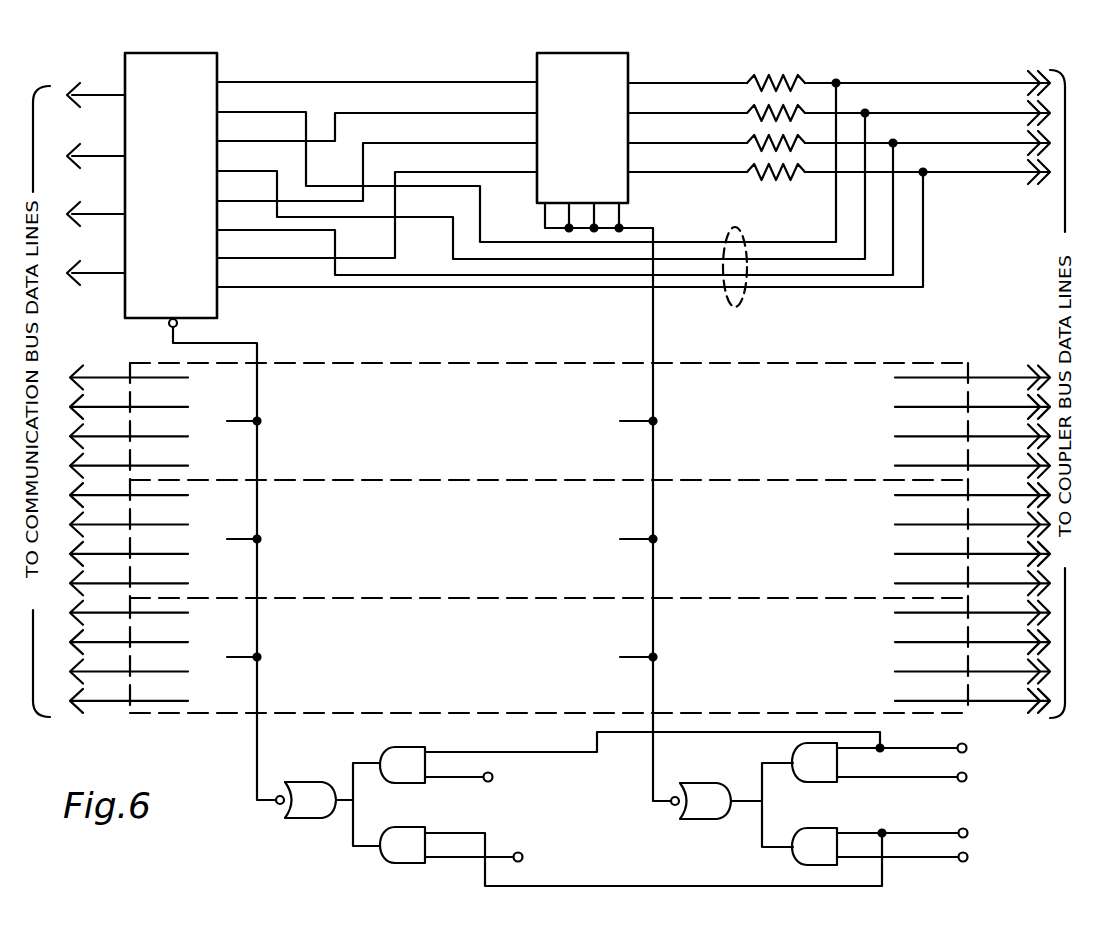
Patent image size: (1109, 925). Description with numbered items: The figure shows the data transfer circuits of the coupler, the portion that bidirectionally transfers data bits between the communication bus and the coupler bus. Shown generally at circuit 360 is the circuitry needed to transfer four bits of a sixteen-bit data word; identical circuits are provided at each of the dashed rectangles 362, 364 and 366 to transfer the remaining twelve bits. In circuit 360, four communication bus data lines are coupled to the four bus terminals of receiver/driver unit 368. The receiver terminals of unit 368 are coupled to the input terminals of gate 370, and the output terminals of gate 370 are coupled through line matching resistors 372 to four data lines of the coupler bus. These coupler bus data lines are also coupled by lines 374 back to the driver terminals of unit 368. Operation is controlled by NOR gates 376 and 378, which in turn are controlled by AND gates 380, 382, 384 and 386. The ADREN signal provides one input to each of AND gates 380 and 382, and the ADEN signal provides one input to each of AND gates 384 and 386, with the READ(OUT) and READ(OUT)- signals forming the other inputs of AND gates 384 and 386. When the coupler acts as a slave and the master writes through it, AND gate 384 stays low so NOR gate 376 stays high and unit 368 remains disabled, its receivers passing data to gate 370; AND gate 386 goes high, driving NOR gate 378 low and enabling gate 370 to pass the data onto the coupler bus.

The circuit 360 is at (412, 47).
The dashed rectangle 362 is at (468, 435).
The dashed rectangle 364 is at (468, 552).
The dashed rectangle 366 is at (468, 668).
The receiver/driver unit 368 is at (158, 53).
The gate 370 is at (628, 62).
The line matching resistors 372 is at (816, 56).
The lines 374 is at (739, 303).
The NOR gate 376 is at (307, 788).
The NOR gate 378 is at (700, 793).
The AND gate 380 is at (405, 750).
The AND gate 382 is at (803, 755).
The AND gate 384 is at (405, 863).
The AND gate 386 is at (803, 855).